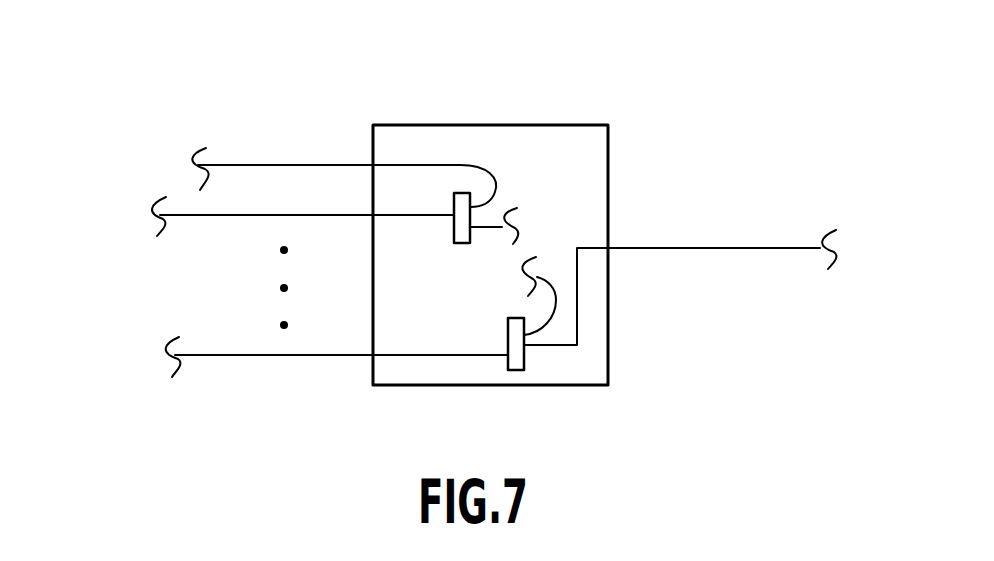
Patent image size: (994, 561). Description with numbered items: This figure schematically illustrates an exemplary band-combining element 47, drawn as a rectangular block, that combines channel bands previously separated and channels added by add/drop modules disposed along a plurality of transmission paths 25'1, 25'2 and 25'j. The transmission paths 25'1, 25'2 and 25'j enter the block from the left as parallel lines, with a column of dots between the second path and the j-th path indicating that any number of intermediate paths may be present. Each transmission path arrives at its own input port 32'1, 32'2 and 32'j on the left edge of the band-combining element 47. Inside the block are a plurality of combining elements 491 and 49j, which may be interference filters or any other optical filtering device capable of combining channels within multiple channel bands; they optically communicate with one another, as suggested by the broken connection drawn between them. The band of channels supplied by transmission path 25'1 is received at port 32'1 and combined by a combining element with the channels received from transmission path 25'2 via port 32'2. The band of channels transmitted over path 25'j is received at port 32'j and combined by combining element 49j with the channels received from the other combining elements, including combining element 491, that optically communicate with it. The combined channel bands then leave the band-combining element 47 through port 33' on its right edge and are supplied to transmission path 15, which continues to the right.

The band-combining element 47 is at (530, 125).
The transmission path 25'1 is at (282, 114).
The transmission path 25'2 is at (259, 257).
The transmission path 25'j is at (269, 403).
The port 32'1 is at (409, 129).
The port 32'2 is at (383, 263).
The port 32'j is at (400, 406).
The combining element 491 is at (463, 207).
The combining element 49j is at (508, 349).
The port 33' is at (614, 296).
The transmission path 15 is at (751, 248).